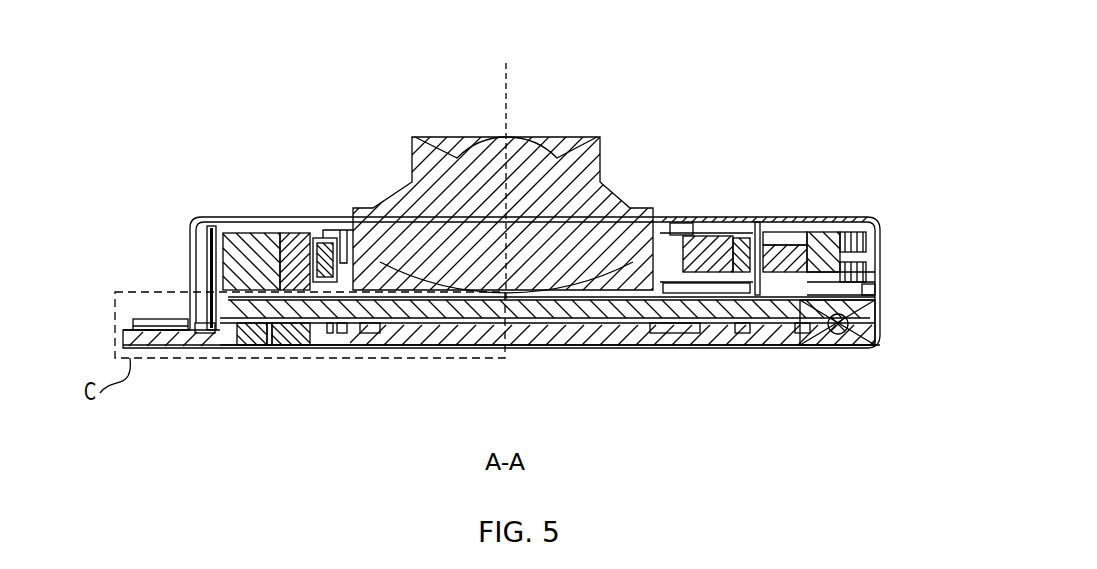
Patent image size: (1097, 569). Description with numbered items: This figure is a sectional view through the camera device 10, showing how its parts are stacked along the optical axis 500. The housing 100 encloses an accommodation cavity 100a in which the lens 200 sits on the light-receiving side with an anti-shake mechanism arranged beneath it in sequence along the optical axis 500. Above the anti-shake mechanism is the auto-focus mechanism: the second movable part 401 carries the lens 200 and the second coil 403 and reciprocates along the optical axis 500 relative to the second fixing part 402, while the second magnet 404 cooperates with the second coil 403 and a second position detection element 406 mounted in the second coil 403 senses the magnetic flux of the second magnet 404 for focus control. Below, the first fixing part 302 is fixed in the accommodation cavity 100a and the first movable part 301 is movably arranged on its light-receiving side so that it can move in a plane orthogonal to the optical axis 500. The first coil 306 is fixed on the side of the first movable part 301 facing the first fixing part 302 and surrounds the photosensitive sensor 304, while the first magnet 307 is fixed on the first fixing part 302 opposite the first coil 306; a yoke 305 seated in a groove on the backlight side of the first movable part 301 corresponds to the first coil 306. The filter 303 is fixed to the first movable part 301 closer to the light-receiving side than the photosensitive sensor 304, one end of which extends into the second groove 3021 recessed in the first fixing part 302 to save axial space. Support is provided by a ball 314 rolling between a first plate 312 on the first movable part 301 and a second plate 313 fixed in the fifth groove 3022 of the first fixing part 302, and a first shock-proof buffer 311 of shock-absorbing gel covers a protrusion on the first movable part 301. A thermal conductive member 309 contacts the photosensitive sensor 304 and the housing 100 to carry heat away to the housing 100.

The camera device 10 is at (838, 86).
The housing 100 is at (211, 222).
The accommodation cavity 100a is at (662, 225).
The lens 200 is at (603, 178).
The first movable part 301 is at (805, 295).
The first fixing part 302 is at (860, 243).
The filter 303 is at (458, 340).
The photosensitive sensor 304 is at (330, 318).
The yoke 305 is at (262, 323).
The first coil 306 is at (228, 315).
The first magnet 307 is at (296, 323).
The thermal conductive member 309 is at (376, 323).
The first shock-proof buffer 311 is at (878, 266).
The first plate 312 is at (878, 280).
The second plate 313 is at (878, 344).
The ball 314 is at (878, 310).
The second movable part 401 is at (334, 238).
The second fixing part 402 is at (230, 300).
The second coil 403 is at (304, 233).
The second magnet 404 is at (272, 233).
The second position detection element 406 is at (706, 236).
The optical axis 500 is at (506, 90).
The second groove 3021 is at (740, 333).
The fifth groove 3022 is at (803, 333).